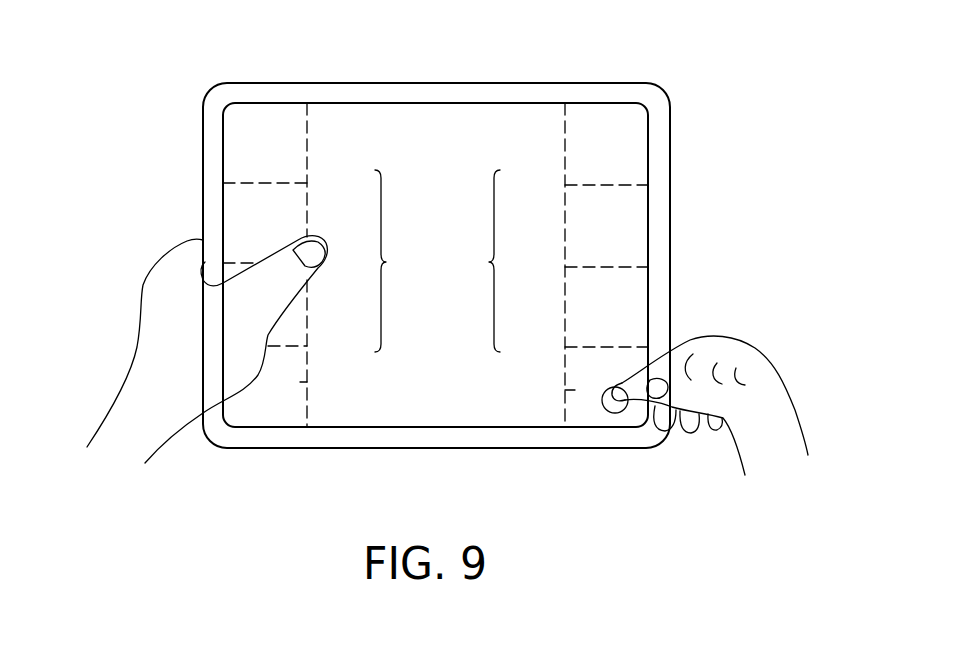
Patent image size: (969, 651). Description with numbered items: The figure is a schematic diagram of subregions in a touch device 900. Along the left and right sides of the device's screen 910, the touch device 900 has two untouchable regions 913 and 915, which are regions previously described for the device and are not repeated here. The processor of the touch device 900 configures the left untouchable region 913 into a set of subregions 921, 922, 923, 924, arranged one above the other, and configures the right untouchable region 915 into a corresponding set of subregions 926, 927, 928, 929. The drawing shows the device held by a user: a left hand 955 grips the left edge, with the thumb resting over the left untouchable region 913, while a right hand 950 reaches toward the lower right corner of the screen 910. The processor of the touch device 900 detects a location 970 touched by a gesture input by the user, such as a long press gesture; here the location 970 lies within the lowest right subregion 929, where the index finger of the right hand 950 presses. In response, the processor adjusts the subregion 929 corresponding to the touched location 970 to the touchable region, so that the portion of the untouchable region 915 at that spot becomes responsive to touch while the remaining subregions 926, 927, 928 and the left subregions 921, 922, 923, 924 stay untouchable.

The touch device 900 is at (258, 80).
The display screen 910 is at (518, 103).
The untouchable region 913 is at (366, 265).
The untouchable region 915 is at (508, 265).
The subregion 921 is at (287, 143).
The subregion 922 is at (295, 207).
The subregion 923 is at (297, 315).
The subregion 924 is at (300, 382).
The subregion 926 is at (573, 149).
The subregion 927 is at (576, 215).
The subregion 928 is at (580, 302).
The subregion 929 is at (575, 390).
The right hand 950 is at (787, 408).
The left hand 955 is at (143, 367).
The location 970 is at (613, 411).